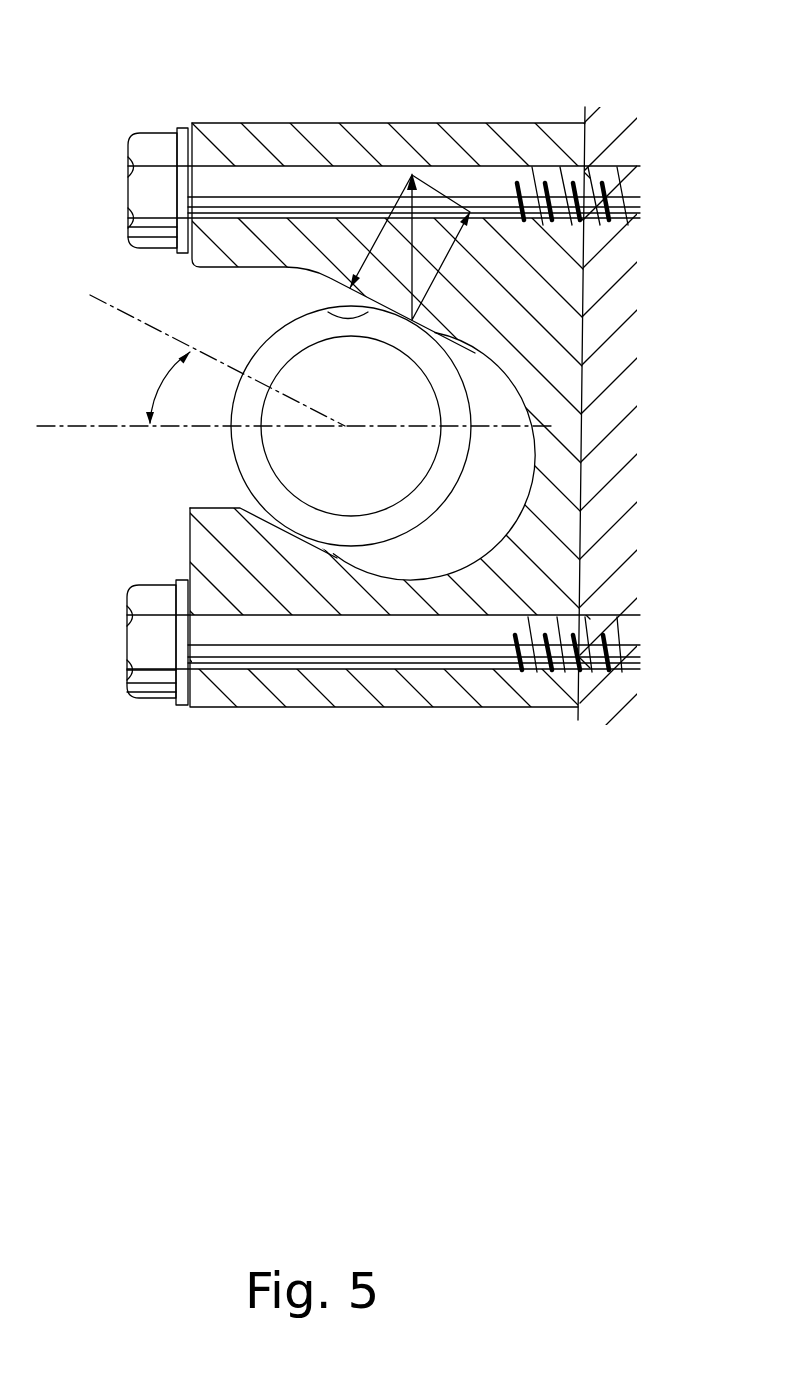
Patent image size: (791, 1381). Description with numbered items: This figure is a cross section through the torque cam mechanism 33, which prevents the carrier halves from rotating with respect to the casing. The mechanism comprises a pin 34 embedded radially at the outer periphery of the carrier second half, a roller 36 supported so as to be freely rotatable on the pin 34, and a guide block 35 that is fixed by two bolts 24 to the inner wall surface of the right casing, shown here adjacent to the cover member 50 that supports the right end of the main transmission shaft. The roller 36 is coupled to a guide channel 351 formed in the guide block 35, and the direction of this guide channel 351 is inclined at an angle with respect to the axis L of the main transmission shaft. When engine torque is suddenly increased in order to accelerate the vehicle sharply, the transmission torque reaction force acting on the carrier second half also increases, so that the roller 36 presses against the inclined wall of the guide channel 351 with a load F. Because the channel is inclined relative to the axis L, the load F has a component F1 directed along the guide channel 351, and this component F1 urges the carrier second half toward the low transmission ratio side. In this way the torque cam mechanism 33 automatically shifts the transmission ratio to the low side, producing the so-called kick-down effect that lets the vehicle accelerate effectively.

The bolt 24 is at (158, 147).
The torque cam mechanism 33 is at (184, 443).
The pin 34 is at (253, 452).
The guide block 35 is at (400, 120).
The guide channel 351 is at (527, 482).
The roller 36 is at (366, 530).
The cover member 50 is at (603, 378).
The axis of the main transmission shaft L is at (105, 425).
The load F is at (412, 258).
The component of the load F1 is at (328, 309).